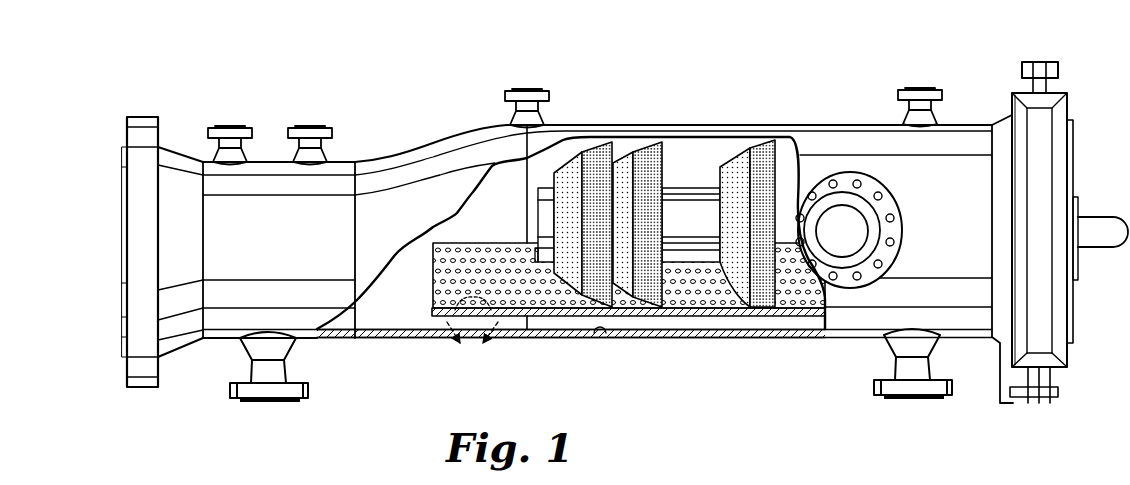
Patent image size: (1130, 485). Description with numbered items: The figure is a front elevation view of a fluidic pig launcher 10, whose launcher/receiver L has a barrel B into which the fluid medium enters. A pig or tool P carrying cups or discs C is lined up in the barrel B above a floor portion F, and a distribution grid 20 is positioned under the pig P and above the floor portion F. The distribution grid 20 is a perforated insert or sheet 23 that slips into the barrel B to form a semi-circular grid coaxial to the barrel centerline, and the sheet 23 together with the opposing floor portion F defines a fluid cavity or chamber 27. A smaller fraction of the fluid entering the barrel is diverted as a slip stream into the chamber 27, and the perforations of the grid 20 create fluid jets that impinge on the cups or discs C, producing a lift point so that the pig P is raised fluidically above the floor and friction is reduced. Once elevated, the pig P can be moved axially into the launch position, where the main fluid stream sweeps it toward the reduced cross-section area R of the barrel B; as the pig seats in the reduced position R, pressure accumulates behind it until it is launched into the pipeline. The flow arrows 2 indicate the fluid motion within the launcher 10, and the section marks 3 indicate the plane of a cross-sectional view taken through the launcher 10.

The reducer or reduced area position R is at (310, 213).
The fluidic pig launcher 10 is at (498, 212).
The distribution grid 20 is at (432, 278).
The fluid flow arrows 2 is at (472, 341).
The insert or sheet 23 is at (553, 318).
The floor portion F is at (598, 334).
The fluid cavity or chamber 27 is at (717, 323).
The cups or discs C is at (637, 153).
The pig or tool P is at (687, 197).
The launcher/receiver L is at (748, 110).
The barrel B is at (828, 125).
The section line 3- 3 is at (650, 67).